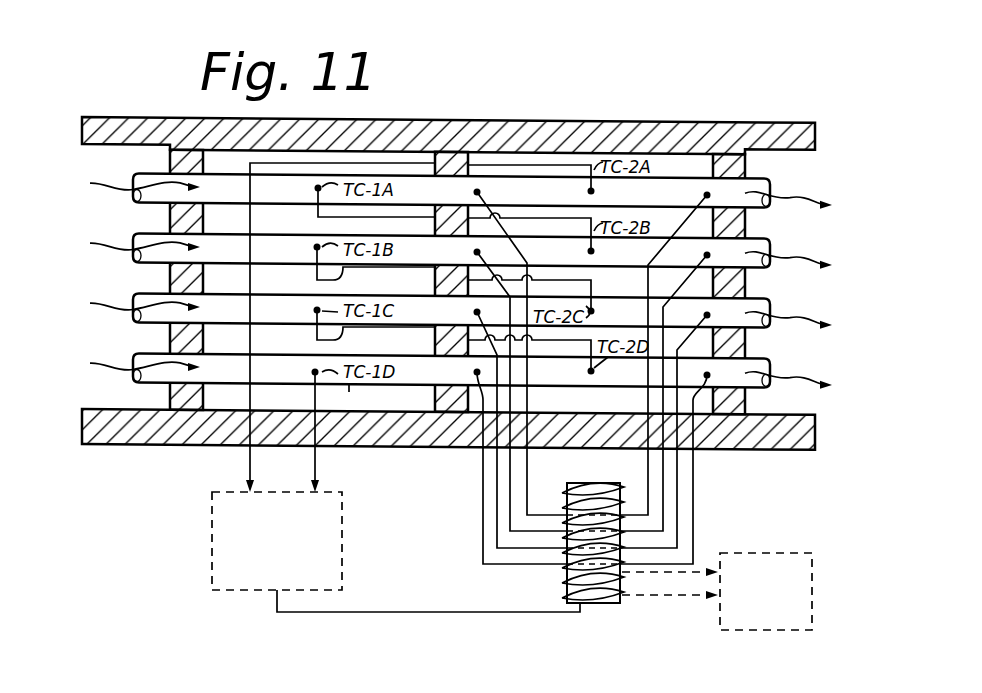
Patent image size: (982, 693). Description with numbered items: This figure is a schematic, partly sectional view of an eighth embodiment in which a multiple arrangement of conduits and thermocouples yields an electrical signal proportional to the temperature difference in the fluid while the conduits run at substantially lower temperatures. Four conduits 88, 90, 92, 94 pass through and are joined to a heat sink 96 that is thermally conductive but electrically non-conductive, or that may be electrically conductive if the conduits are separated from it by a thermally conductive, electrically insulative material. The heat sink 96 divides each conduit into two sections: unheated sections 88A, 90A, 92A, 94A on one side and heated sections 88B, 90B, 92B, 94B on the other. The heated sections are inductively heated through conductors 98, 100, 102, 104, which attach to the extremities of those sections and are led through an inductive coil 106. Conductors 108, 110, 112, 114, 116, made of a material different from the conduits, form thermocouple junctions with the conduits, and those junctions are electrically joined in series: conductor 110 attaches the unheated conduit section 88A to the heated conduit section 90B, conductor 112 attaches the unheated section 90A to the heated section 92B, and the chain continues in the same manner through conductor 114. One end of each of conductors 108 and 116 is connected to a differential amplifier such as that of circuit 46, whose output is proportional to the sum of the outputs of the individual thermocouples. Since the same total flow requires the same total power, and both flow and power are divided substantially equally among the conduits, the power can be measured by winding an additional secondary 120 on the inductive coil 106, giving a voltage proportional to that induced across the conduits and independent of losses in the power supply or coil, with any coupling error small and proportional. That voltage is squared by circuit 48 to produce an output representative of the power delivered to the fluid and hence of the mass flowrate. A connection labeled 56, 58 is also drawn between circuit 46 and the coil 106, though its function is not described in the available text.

The circuit 46 is at (343, 565).
The squaring circuit 48 is at (750, 632).
The conductor 56 is at (428, 620).
The conductor 58 is at (420, 614).
The conduit 88 is at (290, 201).
The unheated conduit section 88A is at (345, 207).
The heated conduit section 88B is at (635, 205).
The conduit 90 is at (300, 237).
The unheated conduit section 90A is at (317, 280).
The heated conduit section 90B is at (635, 267).
The conduit 92 is at (290, 321).
The unheated conduit section 92A is at (317, 340).
The heated conduit section 92B is at (637, 325).
The conduit 94 is at (290, 381).
The unheated conduit section 94A is at (349, 392).
The heated conduit section 94B is at (590, 386).
The heat sink 96 is at (157, 455).
The conductor 98 is at (482, 483).
The conductor 100 is at (497, 502).
The conductor 102 is at (510, 520).
The conductor 104 is at (528, 461).
The inductive coil 106 is at (587, 483).
The conductor 108 is at (543, 165).
The conductor 110 is at (563, 197).
The conductor 112 is at (596, 276).
The conductor 114 is at (548, 343).
The conductor 116 is at (315, 398).
The additional secondary 120 is at (650, 592).